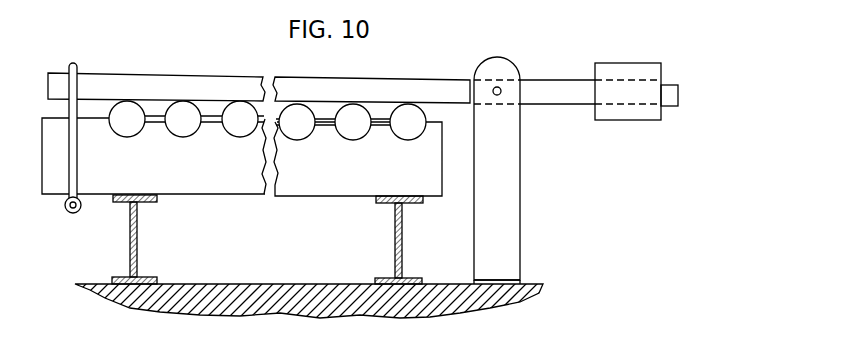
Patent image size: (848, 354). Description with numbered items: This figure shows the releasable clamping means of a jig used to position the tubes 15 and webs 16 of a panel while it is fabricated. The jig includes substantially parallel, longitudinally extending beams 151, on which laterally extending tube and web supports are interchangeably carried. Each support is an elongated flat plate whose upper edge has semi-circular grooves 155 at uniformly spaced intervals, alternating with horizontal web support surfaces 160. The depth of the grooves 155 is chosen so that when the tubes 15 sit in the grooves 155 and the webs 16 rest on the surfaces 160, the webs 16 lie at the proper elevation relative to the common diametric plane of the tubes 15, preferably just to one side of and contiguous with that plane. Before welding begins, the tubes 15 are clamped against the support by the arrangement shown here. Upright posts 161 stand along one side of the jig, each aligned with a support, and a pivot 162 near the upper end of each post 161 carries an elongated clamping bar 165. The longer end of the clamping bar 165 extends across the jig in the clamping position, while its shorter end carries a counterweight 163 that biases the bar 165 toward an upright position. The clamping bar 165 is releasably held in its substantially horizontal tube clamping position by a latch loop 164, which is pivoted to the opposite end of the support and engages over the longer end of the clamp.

The tubes 15 is at (112, 107).
The webs 16 is at (156, 117).
The beams 151 is at (129, 236).
The grooves 155 is at (342, 128).
The web support surfaces 160 is at (387, 118).
The upright posts 161 is at (505, 201).
The pivot 162 is at (500, 87).
The counterweights 163 is at (630, 120).
The latch loops 164 is at (78, 165).
The clamping bar 165 is at (350, 87).